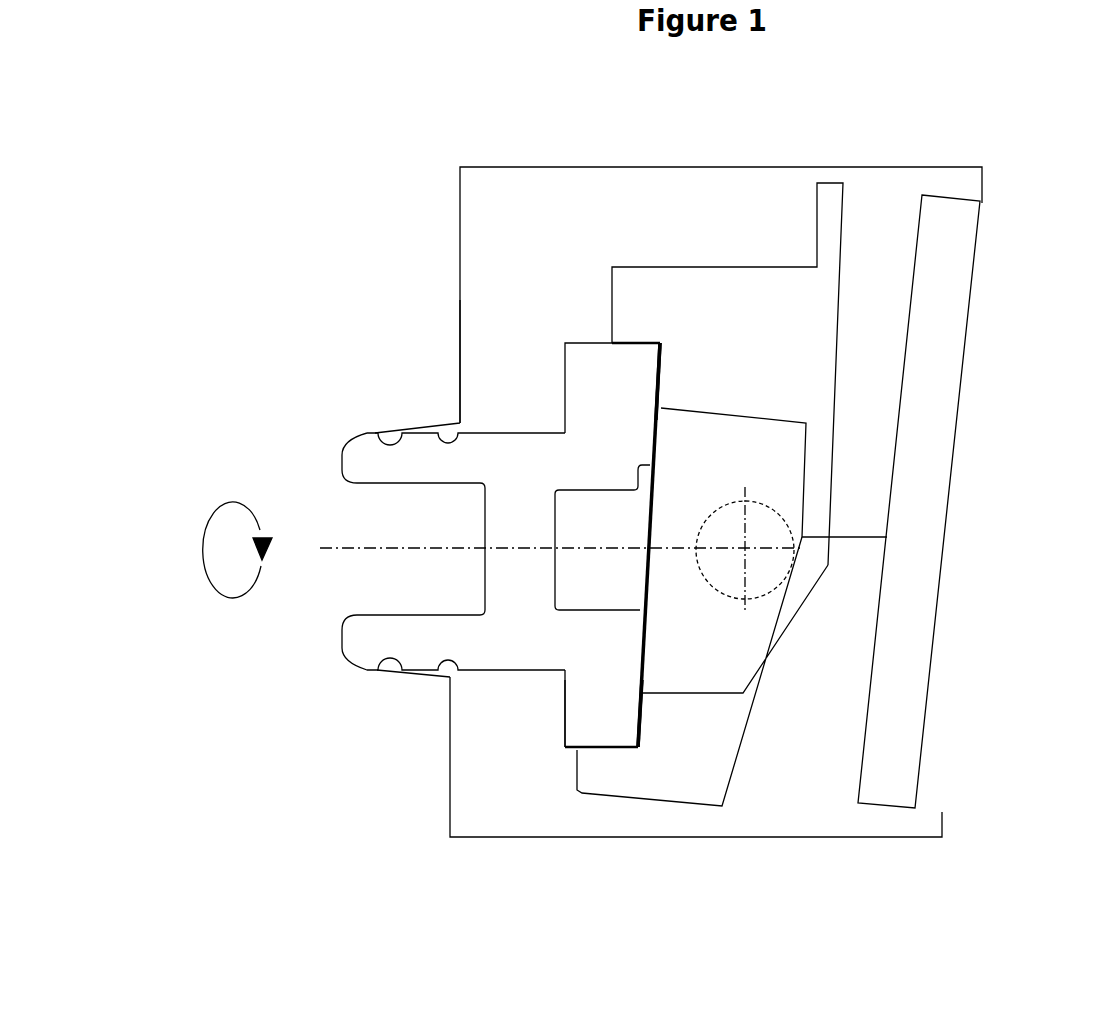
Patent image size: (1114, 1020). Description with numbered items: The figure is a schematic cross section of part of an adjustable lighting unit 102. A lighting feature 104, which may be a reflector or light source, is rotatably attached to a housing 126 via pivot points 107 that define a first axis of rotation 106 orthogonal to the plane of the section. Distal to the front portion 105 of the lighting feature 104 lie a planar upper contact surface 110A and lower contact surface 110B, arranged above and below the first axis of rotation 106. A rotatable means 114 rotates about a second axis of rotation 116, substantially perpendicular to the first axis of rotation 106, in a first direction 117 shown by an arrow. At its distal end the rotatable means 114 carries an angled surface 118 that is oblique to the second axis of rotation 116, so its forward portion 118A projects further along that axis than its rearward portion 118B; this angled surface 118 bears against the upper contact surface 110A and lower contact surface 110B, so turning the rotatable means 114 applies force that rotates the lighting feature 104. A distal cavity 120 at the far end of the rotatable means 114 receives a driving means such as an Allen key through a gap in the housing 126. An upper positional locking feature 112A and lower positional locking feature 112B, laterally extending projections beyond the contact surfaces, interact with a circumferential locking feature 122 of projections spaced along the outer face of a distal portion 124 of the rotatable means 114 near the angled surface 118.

The lighting unit 102 is at (633, 466).
The lighting feature 104 is at (847, 215).
The front portion 105 is at (840, 418).
The first axis of rotation 106 is at (754, 545).
The pivot points 107 is at (754, 560).
The upper contact surface 110A is at (662, 377).
The lower contact surface 110B is at (648, 712).
The upper positional locking feature 112A is at (623, 343).
The lower positional locking feature 112B is at (600, 750).
The rotatable means 114 is at (345, 448).
The second axis of rotation 116 is at (323, 545).
The first direction 117 is at (207, 507).
The angled surface 118 is at (640, 597).
The forward portion 118A is at (660, 343).
The rearward portion 118B is at (636, 748).
The distal cavity 120 is at (353, 588).
The circumferential locking feature 122 is at (583, 343).
The distal portion 124 is at (563, 717).
The housing 126 is at (457, 325).